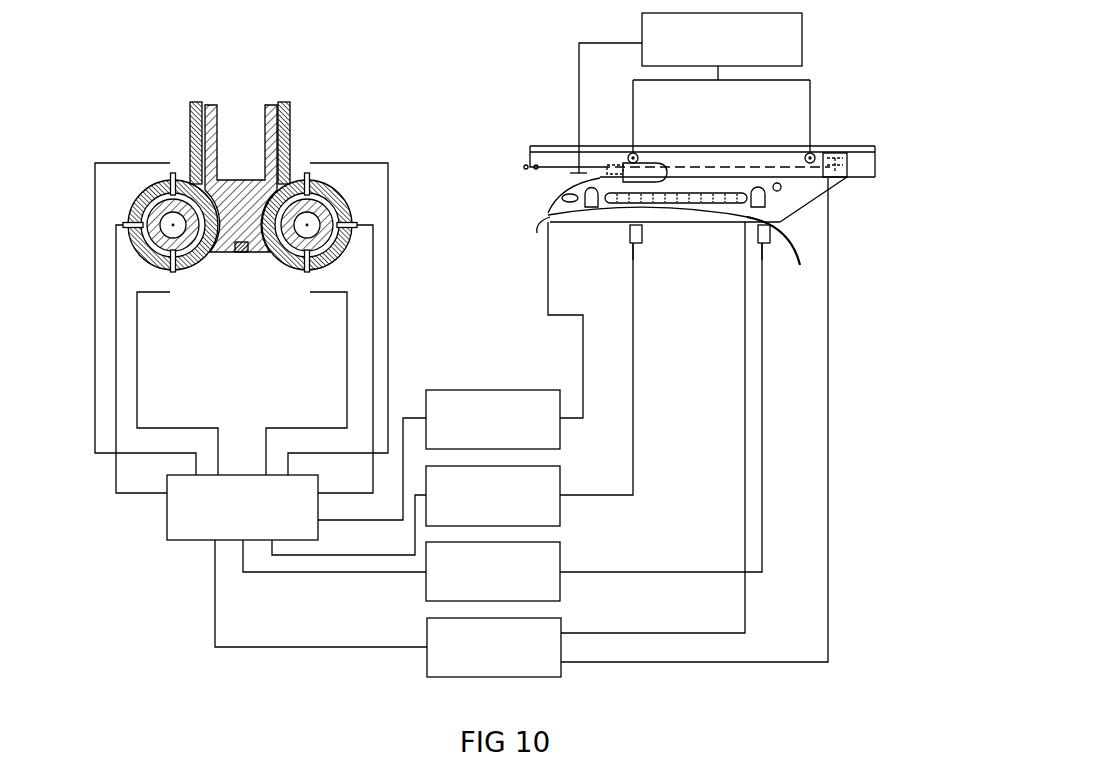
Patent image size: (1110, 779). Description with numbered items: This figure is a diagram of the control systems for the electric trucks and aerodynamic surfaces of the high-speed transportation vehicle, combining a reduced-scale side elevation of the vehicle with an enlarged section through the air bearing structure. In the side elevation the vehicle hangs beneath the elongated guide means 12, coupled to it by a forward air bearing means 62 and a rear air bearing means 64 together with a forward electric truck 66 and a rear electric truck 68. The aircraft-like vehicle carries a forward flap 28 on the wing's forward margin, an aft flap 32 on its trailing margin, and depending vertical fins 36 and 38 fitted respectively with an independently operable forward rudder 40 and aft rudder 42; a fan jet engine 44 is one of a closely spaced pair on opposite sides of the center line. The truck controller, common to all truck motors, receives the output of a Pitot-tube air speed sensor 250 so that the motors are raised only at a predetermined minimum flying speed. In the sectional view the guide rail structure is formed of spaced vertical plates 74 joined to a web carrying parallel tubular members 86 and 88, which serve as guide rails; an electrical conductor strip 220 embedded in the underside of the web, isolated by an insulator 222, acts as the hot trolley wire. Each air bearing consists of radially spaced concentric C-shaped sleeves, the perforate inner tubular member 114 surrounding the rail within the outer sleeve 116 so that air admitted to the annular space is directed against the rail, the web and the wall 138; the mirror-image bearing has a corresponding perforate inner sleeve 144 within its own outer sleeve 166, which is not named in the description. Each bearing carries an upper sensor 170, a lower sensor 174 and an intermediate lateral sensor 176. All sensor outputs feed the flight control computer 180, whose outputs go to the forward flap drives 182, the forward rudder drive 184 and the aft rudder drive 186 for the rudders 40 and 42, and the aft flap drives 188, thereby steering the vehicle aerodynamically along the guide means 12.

The guide means 12 is at (524, 172).
The forward flap 28 is at (550, 217).
The aft flap 32 is at (803, 263).
The vertical fin 36 is at (622, 232).
The vertical fin 38 is at (737, 228).
The forward rudder 40 is at (640, 243).
The aft rudder 42 is at (760, 230).
The fan jet engine 44 is at (643, 167).
The forward air bearing means 62 is at (613, 160).
The rear air bearing means 64 is at (840, 180).
The forward electric truck 66 is at (633, 153).
The rear electric truck 68 is at (810, 153).
The vertical plate 74 is at (213, 110).
The tubular member 86 is at (150, 183).
The tubular member 88 is at (330, 185).
The inner tubular member 114 is at (335, 260).
The outer sleeve 116 is at (345, 243).
The wall 138 is at (285, 115).
The perforate inner sleeve 144 is at (155, 260).
The outer bearing ring 166 is at (133, 245).
The upper sensor 170 is at (175, 173).
The lower sensor 174 is at (176, 272).
The lateral sensor 176 is at (126, 225).
The flight control computer 180 is at (195, 540).
The forward flap drives 182 is at (560, 433).
The forward rudder drive 184 is at (560, 515).
The rudder drive 186 is at (560, 590).
The aft flap drives 188 is at (548, 670).
The electrical conductor strip 220 is at (242, 252).
The insulator 222 is at (815, 0).
The air speed sensor 250 is at (580, 172).